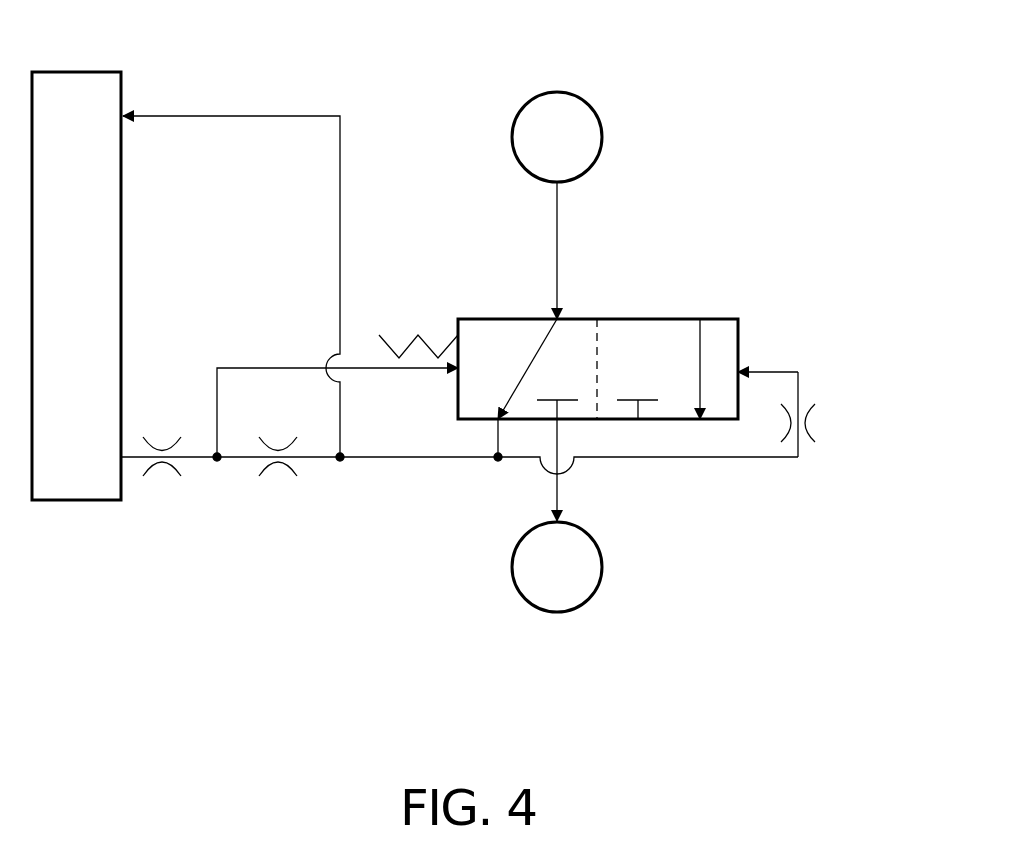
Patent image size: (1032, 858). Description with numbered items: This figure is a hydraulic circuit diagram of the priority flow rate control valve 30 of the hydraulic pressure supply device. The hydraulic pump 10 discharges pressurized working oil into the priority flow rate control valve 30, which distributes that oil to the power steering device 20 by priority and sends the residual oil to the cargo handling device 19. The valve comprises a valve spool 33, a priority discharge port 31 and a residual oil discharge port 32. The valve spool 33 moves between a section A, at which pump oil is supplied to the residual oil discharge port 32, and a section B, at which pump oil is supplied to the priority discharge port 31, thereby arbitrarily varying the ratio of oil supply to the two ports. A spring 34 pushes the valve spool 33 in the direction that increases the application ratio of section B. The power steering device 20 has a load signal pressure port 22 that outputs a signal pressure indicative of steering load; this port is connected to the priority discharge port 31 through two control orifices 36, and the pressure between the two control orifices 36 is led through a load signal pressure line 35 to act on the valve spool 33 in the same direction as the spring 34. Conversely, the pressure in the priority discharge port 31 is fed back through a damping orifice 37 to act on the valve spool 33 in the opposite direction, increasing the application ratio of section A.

The hydraulic pump 10 is at (557, 92).
The cargo handling device 19 is at (604, 567).
The power steering device 20 is at (73, 72).
The load signal pressure port 22 is at (125, 463).
The priority flow rate control valve 30 is at (632, 255).
The priority discharge port 31 is at (497, 420).
The residual oil discharge port 32 is at (558, 422).
The valve spool 33 is at (735, 338).
The spring 34 is at (405, 332).
The load signal pressure line 35 is at (267, 368).
The control orifices 36 is at (163, 470).
The damping orifice 37 is at (812, 423).